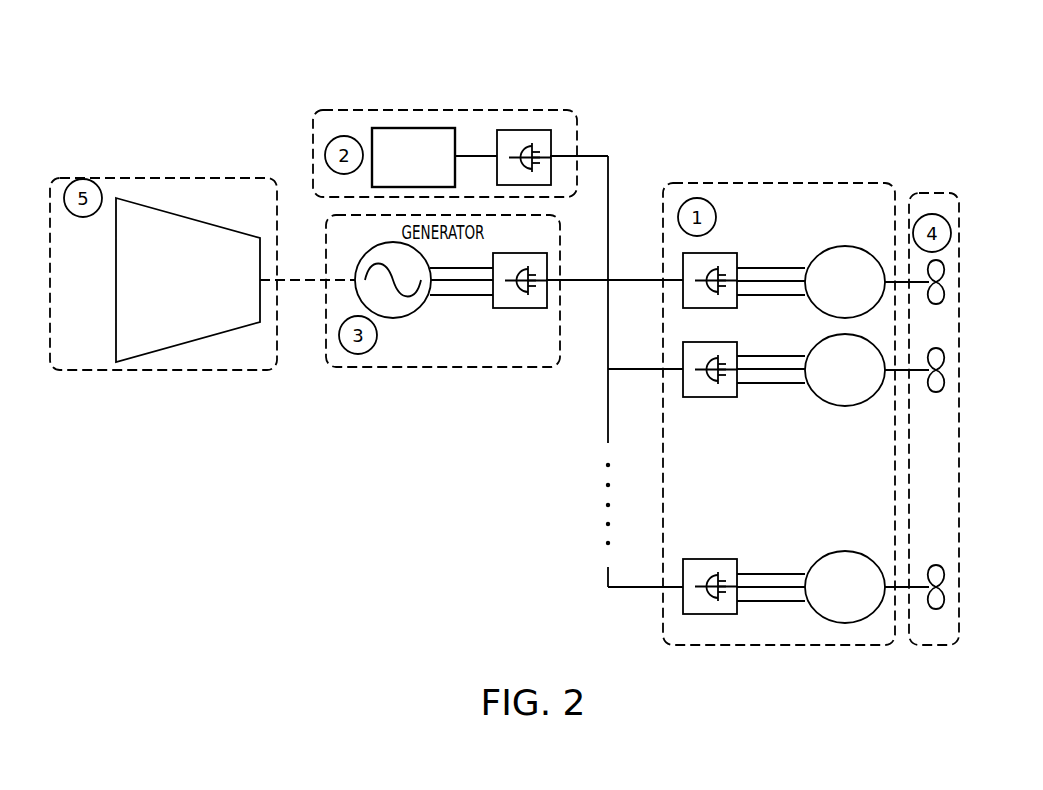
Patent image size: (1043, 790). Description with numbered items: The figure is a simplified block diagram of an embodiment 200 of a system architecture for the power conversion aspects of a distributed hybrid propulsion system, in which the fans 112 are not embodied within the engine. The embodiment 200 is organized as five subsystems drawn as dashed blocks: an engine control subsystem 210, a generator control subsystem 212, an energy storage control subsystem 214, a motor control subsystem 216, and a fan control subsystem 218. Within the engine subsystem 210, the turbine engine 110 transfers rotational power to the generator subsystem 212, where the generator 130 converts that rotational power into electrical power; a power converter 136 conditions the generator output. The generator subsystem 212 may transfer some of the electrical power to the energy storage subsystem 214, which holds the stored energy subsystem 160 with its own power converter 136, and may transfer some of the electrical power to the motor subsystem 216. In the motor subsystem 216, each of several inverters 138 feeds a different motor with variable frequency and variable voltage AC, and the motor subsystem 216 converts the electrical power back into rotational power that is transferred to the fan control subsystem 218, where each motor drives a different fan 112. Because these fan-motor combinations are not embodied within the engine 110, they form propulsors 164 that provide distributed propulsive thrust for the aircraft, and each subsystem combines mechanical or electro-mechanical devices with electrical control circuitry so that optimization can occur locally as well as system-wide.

The embodiment of a system architecture 200 is at (57, 88).
The engine control subsystem 210 is at (230, 178).
The turbine engine 110 is at (165, 355).
The energy storage control subsystem 214 is at (549, 110).
The stored energy subsystem 160 is at (463, 127).
The power converter 136 is at (551, 140).
The generator control subsystem 212 is at (385, 368).
The generator 130 is at (416, 308).
The motor control subsystem 216 is at (860, 183).
The inverter 138 is at (737, 258).
The propulsor 164 is at (807, 421).
The fan control subsystem 218 is at (959, 247).
The fan 112 is at (947, 531).